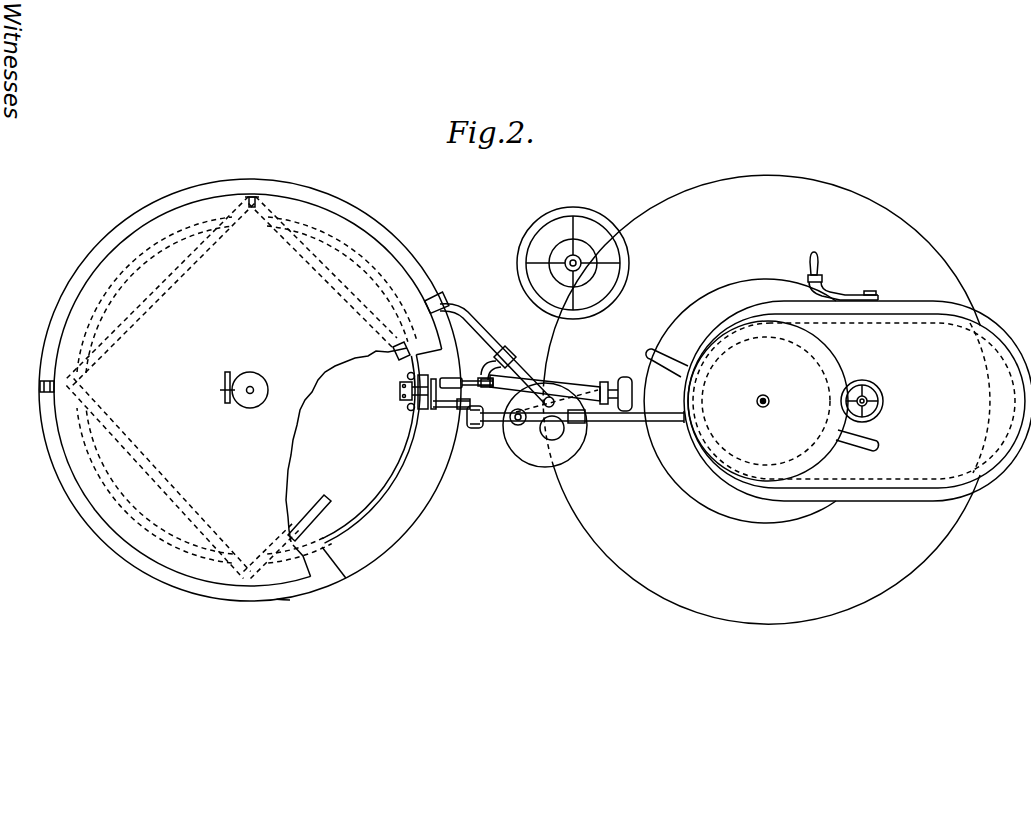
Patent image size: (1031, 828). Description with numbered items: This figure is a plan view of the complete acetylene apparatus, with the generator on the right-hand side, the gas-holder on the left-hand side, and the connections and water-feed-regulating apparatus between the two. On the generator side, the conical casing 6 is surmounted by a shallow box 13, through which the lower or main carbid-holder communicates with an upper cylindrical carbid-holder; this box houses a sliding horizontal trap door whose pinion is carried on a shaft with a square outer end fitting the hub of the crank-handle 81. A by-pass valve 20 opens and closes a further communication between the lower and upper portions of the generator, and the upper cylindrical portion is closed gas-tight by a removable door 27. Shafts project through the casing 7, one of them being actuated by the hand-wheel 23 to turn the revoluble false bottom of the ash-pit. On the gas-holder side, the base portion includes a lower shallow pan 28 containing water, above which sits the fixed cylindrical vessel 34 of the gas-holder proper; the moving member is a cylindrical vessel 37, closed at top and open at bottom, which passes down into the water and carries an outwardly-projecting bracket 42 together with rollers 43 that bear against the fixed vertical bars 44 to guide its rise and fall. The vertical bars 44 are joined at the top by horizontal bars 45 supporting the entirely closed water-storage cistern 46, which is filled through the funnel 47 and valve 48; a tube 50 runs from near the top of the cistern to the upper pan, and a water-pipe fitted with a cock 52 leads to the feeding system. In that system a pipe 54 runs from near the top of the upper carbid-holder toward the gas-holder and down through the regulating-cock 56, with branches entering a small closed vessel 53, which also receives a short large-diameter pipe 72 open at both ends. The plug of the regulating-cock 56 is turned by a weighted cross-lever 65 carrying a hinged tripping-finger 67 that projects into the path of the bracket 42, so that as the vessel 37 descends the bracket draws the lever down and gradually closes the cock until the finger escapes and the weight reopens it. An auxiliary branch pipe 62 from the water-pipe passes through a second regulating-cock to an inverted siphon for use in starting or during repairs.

The conical casing 6 is at (596, 548).
The casing 7 is at (626, 578).
The shallow box 13 is at (891, 489).
The by-pass valve 20 is at (884, 401).
The hand-wheel 23 is at (540, 222).
The removable door 27 is at (746, 474).
The lower shallow pan 28 is at (284, 599).
The cylindrical vessel 34 is at (326, 554).
The cylindrical vessel 37 is at (367, 514).
The arm or bracket 42 is at (407, 406).
The rollers 43 is at (400, 390).
The vertical bars 44 is at (258, 200).
The horizontal bars 45 is at (153, 298).
The water-storage tank or cistern 46 is at (370, 231).
The funnel 47 is at (262, 380).
The valve 48 is at (222, 383).
The tube 50 is at (46, 388).
The cock 52 is at (513, 374).
The small closed vessel 53 is at (527, 455).
The pipe 54 is at (620, 418).
The regulating-cock 56 is at (476, 430).
The branch pipe 62 is at (493, 362).
The cross-lever 65 is at (452, 412).
The tripping-finger 67 is at (434, 402).
The short pipe 72 is at (562, 435).
The crank-handle 81 is at (838, 295).